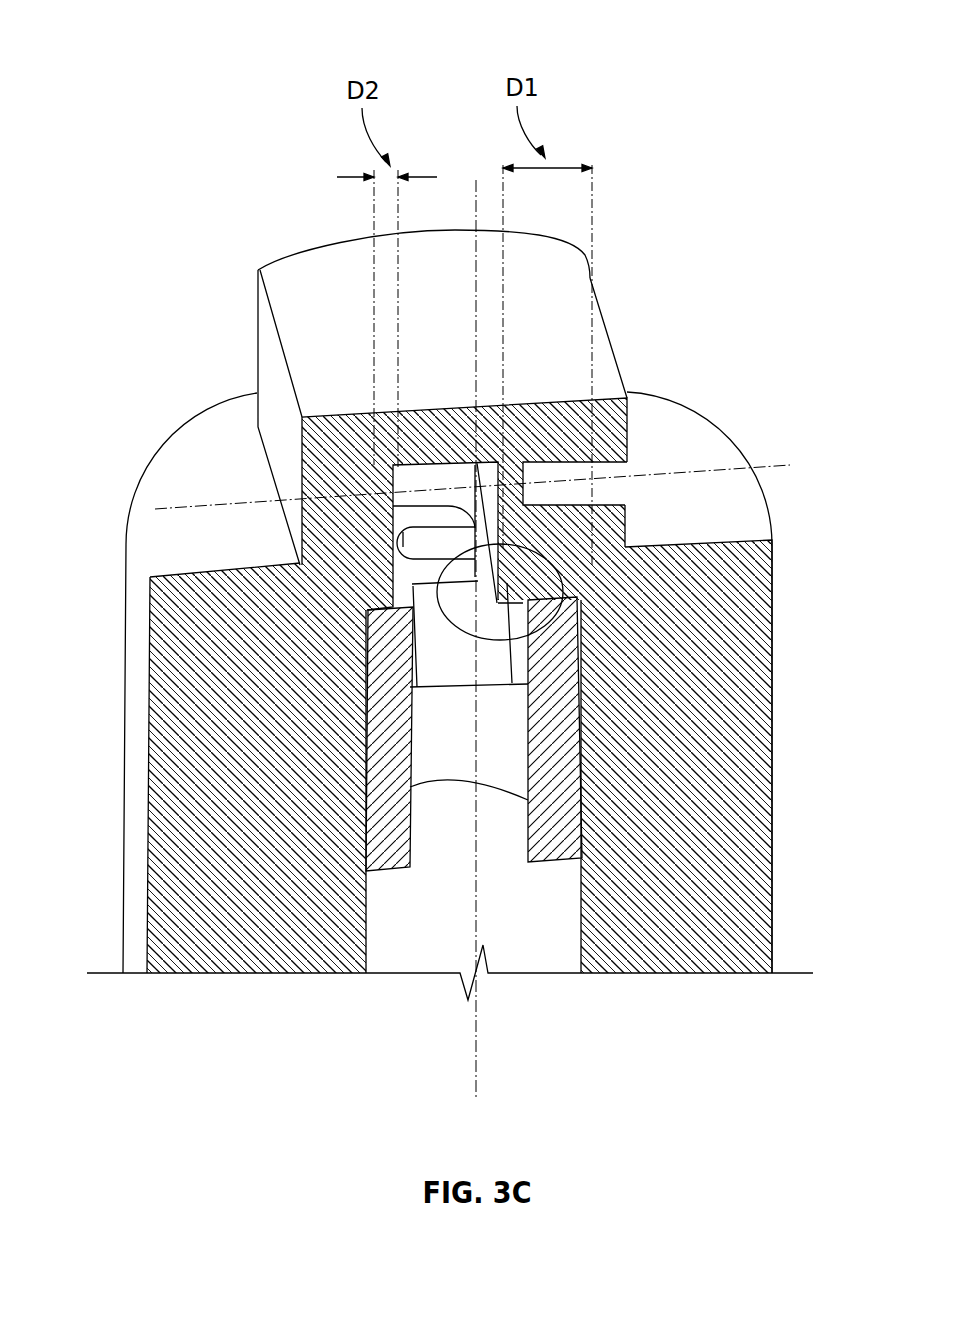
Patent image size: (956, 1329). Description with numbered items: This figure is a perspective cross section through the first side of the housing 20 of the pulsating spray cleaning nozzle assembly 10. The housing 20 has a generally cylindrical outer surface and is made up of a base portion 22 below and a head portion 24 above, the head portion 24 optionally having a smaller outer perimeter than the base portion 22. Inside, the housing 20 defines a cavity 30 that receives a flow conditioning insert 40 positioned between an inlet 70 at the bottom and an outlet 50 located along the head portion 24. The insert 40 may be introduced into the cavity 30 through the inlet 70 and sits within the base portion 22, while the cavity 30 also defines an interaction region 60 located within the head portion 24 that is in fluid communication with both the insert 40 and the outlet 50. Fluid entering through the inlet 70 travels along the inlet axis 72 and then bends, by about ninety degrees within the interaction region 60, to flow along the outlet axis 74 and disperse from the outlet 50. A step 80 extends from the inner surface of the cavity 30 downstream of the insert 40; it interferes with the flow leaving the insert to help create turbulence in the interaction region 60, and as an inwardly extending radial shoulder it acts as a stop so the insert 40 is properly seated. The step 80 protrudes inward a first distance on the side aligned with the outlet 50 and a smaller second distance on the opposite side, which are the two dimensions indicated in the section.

The pulsating spray cleaning nozzle assembly 10 is at (122, 58).
The housing 20 is at (193, 773).
The base portion 22 is at (253, 855).
The head portion 24 is at (283, 320).
The cavity 30 is at (390, 910).
The flow conditioning insert 40 is at (368, 710).
The outlet 50 is at (608, 495).
The interaction region 60 is at (417, 462).
The inlet 70 is at (440, 968).
The inlet axis 72 is at (470, 1022).
The outlet axis 74 is at (180, 503).
The step 80 is at (566, 590).